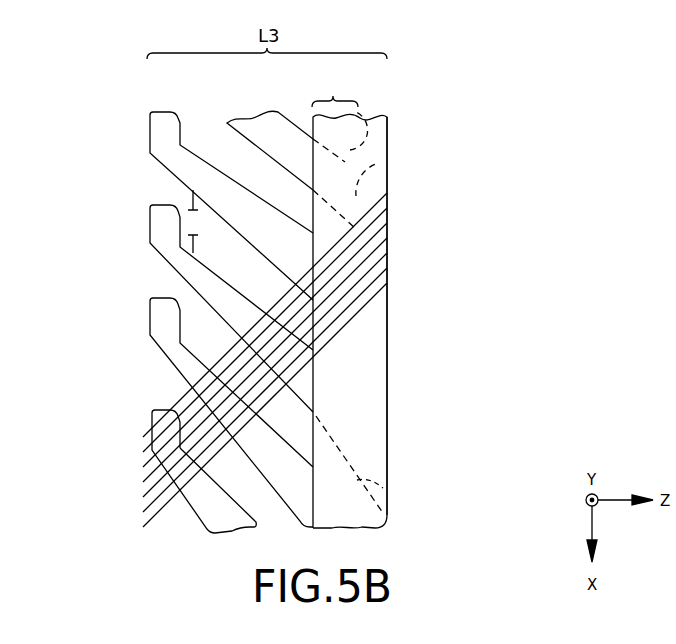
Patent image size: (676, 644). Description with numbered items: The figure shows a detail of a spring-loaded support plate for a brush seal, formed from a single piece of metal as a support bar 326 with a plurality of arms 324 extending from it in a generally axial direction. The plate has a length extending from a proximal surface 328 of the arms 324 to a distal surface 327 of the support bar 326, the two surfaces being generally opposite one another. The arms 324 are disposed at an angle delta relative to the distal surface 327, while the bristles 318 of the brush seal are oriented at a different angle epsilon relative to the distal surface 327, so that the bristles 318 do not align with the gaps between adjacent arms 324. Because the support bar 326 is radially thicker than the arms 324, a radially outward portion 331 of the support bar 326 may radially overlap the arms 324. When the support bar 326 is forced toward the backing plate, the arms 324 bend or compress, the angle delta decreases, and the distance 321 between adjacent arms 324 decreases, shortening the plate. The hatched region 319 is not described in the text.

The bristles 318 is at (376, 243).
The hatched engagement region 319 is at (396, 265).
The distance between adjacent arms 321 is at (199, 221).
The arms 324 is at (187, 175).
The support bar 326 is at (363, 155).
The distal surface 327 is at (387, 408).
The proximal surface 328 is at (155, 315).
The radially outward portion 331 is at (335, 87).